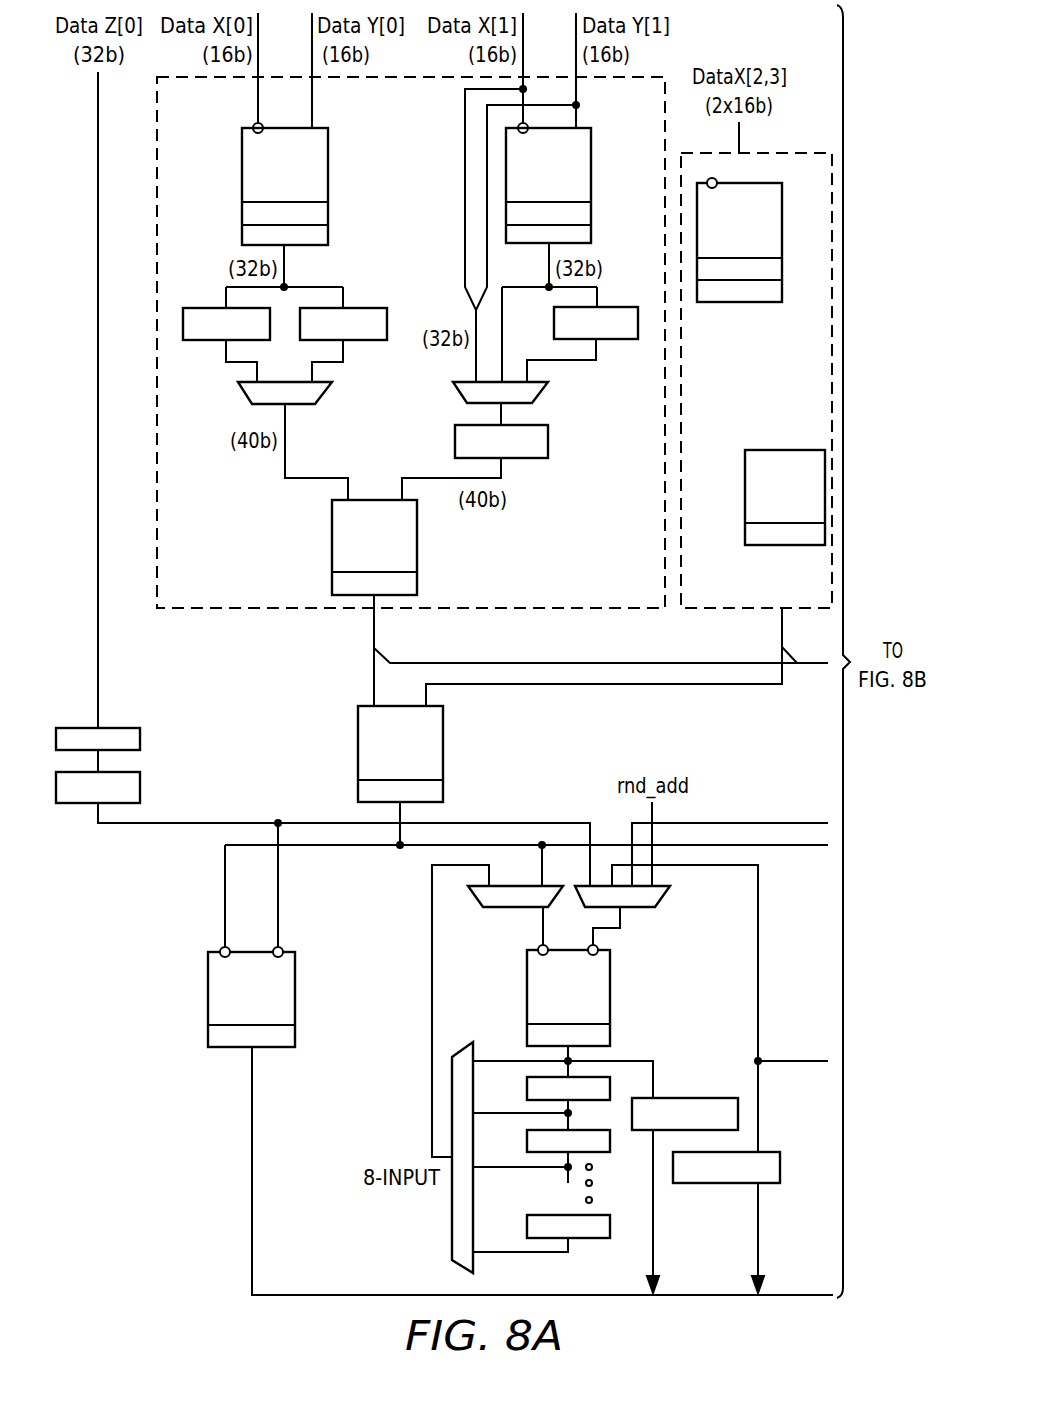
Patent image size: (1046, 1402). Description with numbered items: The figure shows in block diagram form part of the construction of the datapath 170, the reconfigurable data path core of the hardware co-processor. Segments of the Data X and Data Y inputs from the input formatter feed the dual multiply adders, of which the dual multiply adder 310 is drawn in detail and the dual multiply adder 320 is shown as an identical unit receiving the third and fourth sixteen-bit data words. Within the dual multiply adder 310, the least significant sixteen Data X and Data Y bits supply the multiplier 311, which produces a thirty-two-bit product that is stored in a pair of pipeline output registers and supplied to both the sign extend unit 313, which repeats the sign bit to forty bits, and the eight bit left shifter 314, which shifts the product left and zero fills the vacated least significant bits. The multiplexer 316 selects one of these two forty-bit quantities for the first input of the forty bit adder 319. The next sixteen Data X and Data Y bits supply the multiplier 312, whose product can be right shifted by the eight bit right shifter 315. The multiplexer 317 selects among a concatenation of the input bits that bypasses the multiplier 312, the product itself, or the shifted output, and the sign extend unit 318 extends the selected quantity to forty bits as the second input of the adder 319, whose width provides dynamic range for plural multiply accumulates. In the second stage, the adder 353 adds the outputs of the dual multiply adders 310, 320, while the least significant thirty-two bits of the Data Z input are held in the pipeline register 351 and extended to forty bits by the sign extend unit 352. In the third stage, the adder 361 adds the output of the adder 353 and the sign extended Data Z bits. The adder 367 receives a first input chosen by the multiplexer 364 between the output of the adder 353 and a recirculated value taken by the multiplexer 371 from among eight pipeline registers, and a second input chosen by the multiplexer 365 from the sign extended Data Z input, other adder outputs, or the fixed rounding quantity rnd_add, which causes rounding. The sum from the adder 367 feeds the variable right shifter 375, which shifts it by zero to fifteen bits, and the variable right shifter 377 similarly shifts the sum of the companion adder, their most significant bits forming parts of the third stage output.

The datapath 170 is at (878, 42).
The dual multiply adder 310 is at (643, 595).
The dual multiply adder 320 is at (738, 595).
The multiplier 311 is at (242, 187).
The multiplier 312 is at (593, 183).
The sign extend unit 313 is at (210, 305).
The 8 bit left shifter 314 is at (353, 305).
The 8 bit right shifter 315 is at (617, 339).
The multiplexer 316 is at (307, 404).
The multiplexer 317 is at (457, 393).
The sign extend unit 318 is at (548, 442).
The 40 bit adder 319 is at (418, 547).
The pipeline register 351 is at (142, 738).
The sign extend unit 352 is at (142, 788).
The adder 353 is at (358, 757).
The adder 361 is at (208, 1000).
The multiplexer 364 is at (500, 907).
The multiplexer 365 is at (637, 907).
The adder 367 is at (610, 997).
The multiplexer 371 is at (452, 1228).
The variable right shifter 375 is at (697, 1098).
The variable right shifter 377 is at (717, 1183).